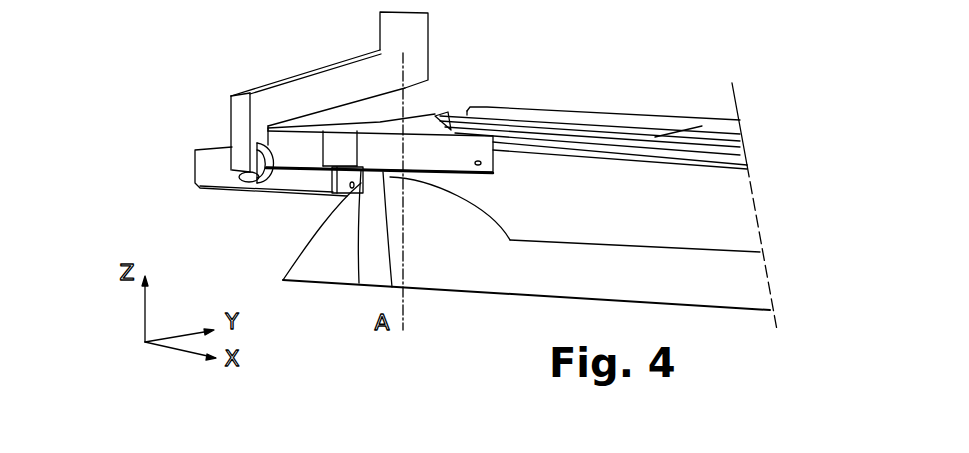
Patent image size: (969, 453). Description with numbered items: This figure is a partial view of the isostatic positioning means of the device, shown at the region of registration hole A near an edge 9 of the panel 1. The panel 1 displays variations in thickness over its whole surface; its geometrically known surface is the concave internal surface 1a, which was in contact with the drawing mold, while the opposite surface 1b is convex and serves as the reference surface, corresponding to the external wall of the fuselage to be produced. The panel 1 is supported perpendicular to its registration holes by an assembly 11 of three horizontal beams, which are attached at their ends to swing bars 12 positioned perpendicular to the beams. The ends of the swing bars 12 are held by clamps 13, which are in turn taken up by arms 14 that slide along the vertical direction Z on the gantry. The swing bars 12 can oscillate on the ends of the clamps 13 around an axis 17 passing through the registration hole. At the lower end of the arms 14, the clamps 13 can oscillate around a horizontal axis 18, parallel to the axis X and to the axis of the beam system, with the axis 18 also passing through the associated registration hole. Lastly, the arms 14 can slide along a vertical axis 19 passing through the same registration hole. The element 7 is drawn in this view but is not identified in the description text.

The panel 1 is at (516, 214).
The concave internal surface 1a is at (481, 263).
The opposite surface 1b is at (718, 213).
The arm 7 is at (304, 92).
The edge 9 is at (320, 220).
The assembly of three horizontal beams 11 is at (600, 102).
The swing bars 12 is at (426, 112).
The clamps 13 is at (232, 199).
The arms 14 is at (298, 97).
The axis 17 is at (357, 287).
The horizontal axis 18 is at (267, 163).
The vertical axis 19 is at (403, 102).